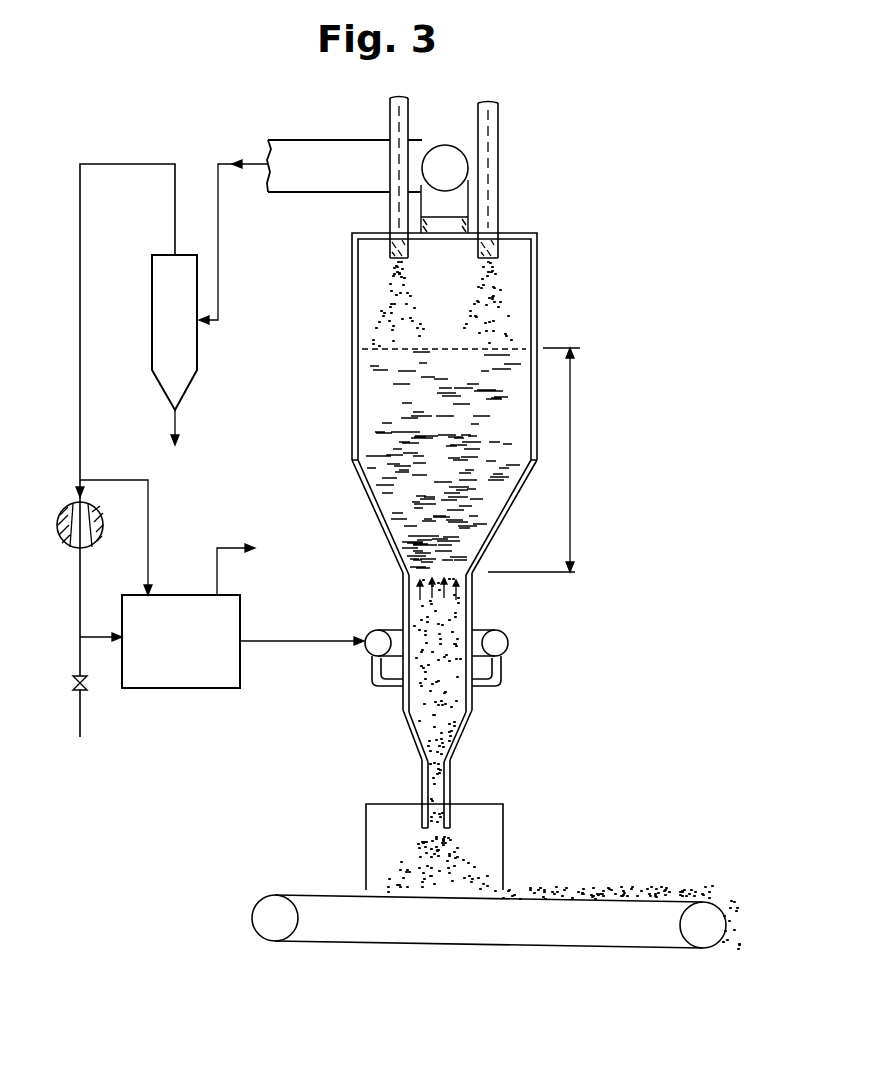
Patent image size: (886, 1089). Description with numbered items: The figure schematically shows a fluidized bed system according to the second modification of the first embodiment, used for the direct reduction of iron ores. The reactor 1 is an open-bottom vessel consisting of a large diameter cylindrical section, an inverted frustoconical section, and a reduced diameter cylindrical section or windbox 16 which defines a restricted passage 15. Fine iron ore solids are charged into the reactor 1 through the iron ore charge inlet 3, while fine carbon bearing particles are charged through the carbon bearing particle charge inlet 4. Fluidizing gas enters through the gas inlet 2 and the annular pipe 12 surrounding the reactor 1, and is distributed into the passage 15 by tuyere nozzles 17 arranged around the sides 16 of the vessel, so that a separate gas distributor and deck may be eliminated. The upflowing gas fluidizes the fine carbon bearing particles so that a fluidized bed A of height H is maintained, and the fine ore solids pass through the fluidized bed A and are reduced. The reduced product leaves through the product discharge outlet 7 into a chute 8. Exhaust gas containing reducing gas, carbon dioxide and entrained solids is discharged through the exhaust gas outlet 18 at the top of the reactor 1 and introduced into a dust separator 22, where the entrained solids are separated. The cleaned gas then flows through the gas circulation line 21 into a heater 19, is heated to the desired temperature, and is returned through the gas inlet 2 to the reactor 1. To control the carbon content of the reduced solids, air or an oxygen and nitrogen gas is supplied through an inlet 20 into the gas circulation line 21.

The reactor 1 is at (352, 327).
The fluidized bed A is at (365, 400).
The gas inlet 2 is at (298, 645).
The iron ore charge inlet 3 is at (400, 125).
The carbon bearing particle charge inlet 4 is at (487, 130).
The product discharge outlet 7 is at (455, 752).
The chute 8 is at (450, 793).
The annular pipe 12 is at (503, 645).
The restricted passage 15 is at (455, 605).
The windbox 16 is at (472, 698).
The tuyere nozzles 17 is at (383, 683).
The exhaust gas outlet 18 is at (452, 168).
The heater 19 is at (197, 651).
The inlet 20 is at (80, 713).
The gas circulation line 21 is at (82, 322).
The dust separator 22 is at (180, 358).
The height of fluidized bed H is at (541, 460).